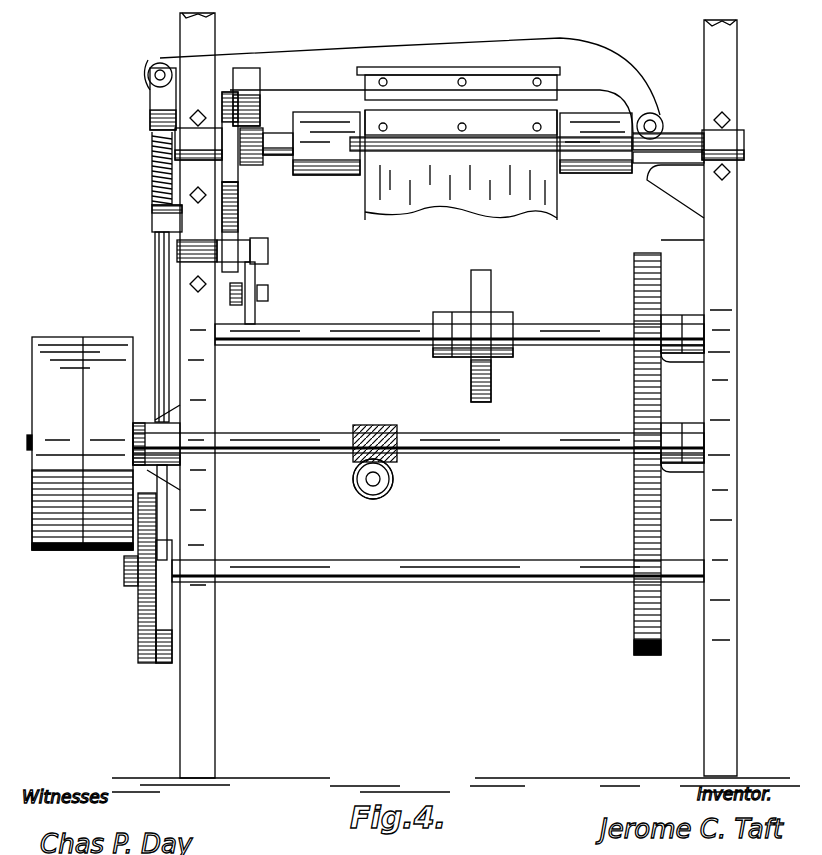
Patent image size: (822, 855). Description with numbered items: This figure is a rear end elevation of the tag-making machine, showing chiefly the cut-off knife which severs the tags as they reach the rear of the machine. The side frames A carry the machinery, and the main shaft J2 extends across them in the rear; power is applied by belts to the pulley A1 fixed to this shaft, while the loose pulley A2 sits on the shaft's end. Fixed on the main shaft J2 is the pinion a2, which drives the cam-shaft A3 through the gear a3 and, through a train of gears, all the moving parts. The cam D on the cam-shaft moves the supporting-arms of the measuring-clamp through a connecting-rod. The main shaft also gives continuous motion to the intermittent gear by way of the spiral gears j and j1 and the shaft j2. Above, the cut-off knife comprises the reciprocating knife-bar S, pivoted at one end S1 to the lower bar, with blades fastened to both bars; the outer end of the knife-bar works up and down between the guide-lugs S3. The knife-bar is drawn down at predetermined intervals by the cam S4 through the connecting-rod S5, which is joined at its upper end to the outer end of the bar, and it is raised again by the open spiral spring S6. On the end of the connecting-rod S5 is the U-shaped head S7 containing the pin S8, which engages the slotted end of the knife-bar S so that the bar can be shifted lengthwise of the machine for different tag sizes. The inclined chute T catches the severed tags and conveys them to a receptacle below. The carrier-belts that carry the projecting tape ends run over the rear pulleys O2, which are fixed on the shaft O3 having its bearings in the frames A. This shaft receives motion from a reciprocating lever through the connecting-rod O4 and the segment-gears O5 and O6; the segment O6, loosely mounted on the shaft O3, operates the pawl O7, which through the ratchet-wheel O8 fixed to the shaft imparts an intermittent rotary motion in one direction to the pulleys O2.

The side frame A is at (202, 652).
The pulley A1 is at (102, 548).
The loose pulley A2 is at (28, 550).
The cam-shaft A3 is at (588, 330).
The pinion a2 is at (633, 399).
The gear a3 is at (661, 283).
The cam D is at (491, 275).
The spiral gear j is at (380, 422).
The spiral gear j1 is at (383, 488).
The shaft j2 is at (360, 483).
The main shaft J2 is at (480, 455).
The reciprocating knife-bar S is at (542, 47).
The pivot S1 is at (660, 122).
The guide-lug S3 is at (257, 78).
The cam S4 is at (138, 620).
The connecting-rod S5 is at (158, 290).
The open spiral spring S6 is at (152, 172).
The U-shaped head S7 is at (170, 92).
The pin S8 is at (158, 70).
The rear pulley O2 is at (327, 177).
The shaft O3 is at (675, 147).
The connecting-rod O4 is at (240, 307).
The segment-gear O5 is at (230, 222).
The segment-gear O6 is at (230, 137).
The pawl O7 is at (240, 108).
The ratchet-wheel O8 is at (255, 128).
The inclined chute T is at (537, 198).